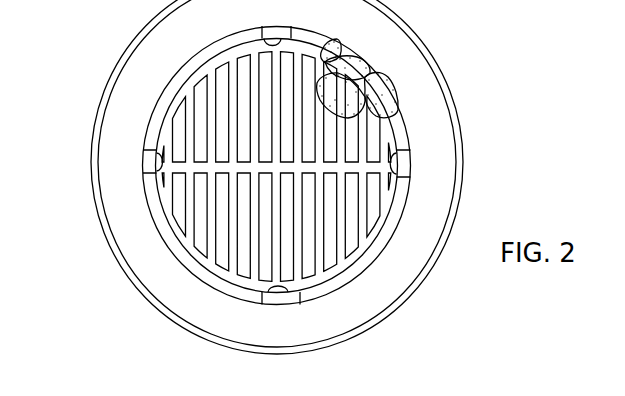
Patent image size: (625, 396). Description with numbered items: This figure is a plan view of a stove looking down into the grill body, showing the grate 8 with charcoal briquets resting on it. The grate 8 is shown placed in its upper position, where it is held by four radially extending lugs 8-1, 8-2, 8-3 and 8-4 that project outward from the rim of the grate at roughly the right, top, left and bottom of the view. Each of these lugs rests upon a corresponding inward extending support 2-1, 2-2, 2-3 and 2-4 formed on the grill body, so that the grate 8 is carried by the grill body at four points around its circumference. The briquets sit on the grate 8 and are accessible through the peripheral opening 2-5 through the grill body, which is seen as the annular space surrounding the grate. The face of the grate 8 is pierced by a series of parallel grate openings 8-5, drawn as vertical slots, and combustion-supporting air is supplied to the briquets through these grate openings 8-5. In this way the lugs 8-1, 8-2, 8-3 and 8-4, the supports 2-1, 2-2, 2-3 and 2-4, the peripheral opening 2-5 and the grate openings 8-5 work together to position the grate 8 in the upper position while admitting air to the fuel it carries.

The inward extending support 2-1 is at (399, 172).
The inward extending support 2-2 is at (274, 30).
The inward extending support 2-3 is at (152, 160).
The inward extending support 2-4 is at (280, 303).
The peripheral opening 2-5 is at (177, 246).
The grate 8 is at (387, 126).
The radially extending lug 8-1 is at (402, 152).
The radially extending lug 8-2 is at (266, 40).
The radially extending lug 8-3 is at (156, 150).
The radially extending lug 8-4 is at (266, 298).
The grate openings 8-5 is at (202, 228).